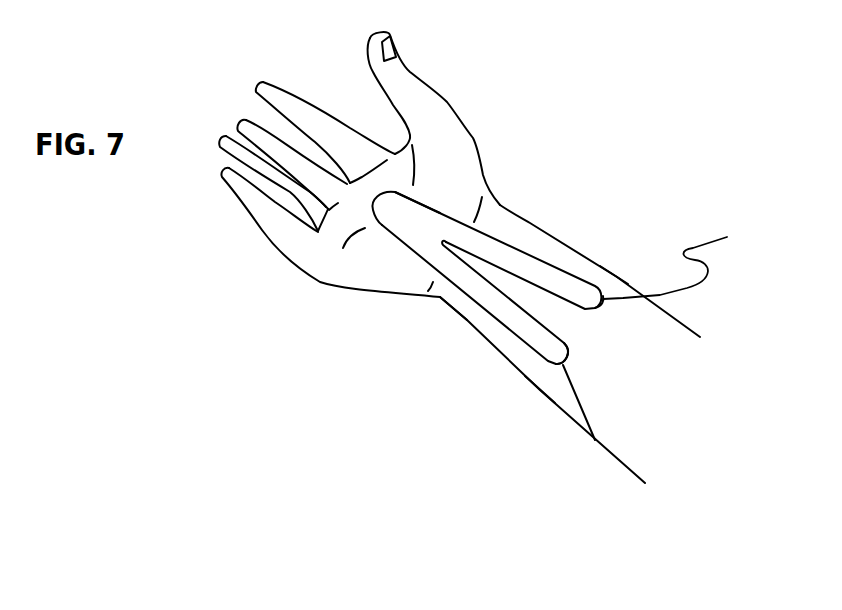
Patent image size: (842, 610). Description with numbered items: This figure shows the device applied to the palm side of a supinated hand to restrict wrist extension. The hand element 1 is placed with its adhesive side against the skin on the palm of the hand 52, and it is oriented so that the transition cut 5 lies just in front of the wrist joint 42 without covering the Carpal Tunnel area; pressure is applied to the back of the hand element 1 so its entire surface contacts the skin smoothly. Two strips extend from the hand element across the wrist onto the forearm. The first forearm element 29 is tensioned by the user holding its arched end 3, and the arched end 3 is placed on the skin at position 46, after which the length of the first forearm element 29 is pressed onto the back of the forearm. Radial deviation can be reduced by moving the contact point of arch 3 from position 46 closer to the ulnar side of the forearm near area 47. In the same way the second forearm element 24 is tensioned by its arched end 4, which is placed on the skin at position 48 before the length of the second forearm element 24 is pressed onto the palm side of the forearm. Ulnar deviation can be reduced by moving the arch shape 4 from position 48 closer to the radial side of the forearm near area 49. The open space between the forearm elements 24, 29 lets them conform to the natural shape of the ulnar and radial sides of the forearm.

The hand element 1 is at (400, 223).
The arched end 3 is at (598, 410).
The arched end 4 is at (674, 260).
The transition cut 5 is at (446, 243).
The second forearm element 24 is at (537, 263).
The first forearm element 29 is at (512, 317).
The wrist joint 42 is at (448, 330).
The position 46 is at (577, 377).
The area 47 is at (540, 386).
The position 48 is at (601, 314).
The area 49 is at (614, 278).
The palm of the hand 52 is at (428, 190).